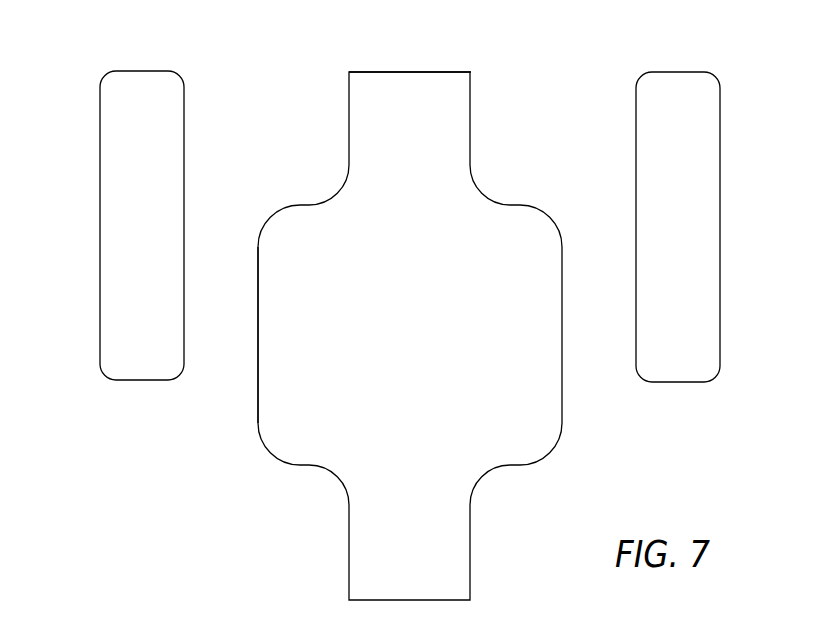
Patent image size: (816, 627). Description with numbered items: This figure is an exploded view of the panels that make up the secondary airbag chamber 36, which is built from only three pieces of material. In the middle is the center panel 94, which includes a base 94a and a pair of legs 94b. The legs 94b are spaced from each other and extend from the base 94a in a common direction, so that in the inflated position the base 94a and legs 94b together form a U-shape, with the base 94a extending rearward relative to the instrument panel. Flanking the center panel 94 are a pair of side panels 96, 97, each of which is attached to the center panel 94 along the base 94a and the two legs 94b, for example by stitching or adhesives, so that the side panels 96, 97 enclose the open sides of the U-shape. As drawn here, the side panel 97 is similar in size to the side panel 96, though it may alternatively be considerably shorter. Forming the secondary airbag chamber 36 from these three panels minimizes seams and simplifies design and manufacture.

The secondary airbag chamber 36 is at (137, 457).
The center panel 94 is at (433, 88).
The base 94a is at (385, 72).
The legs 94b is at (258, 238).
The side panel 96 is at (113, 115).
The side panel 97 is at (703, 115).